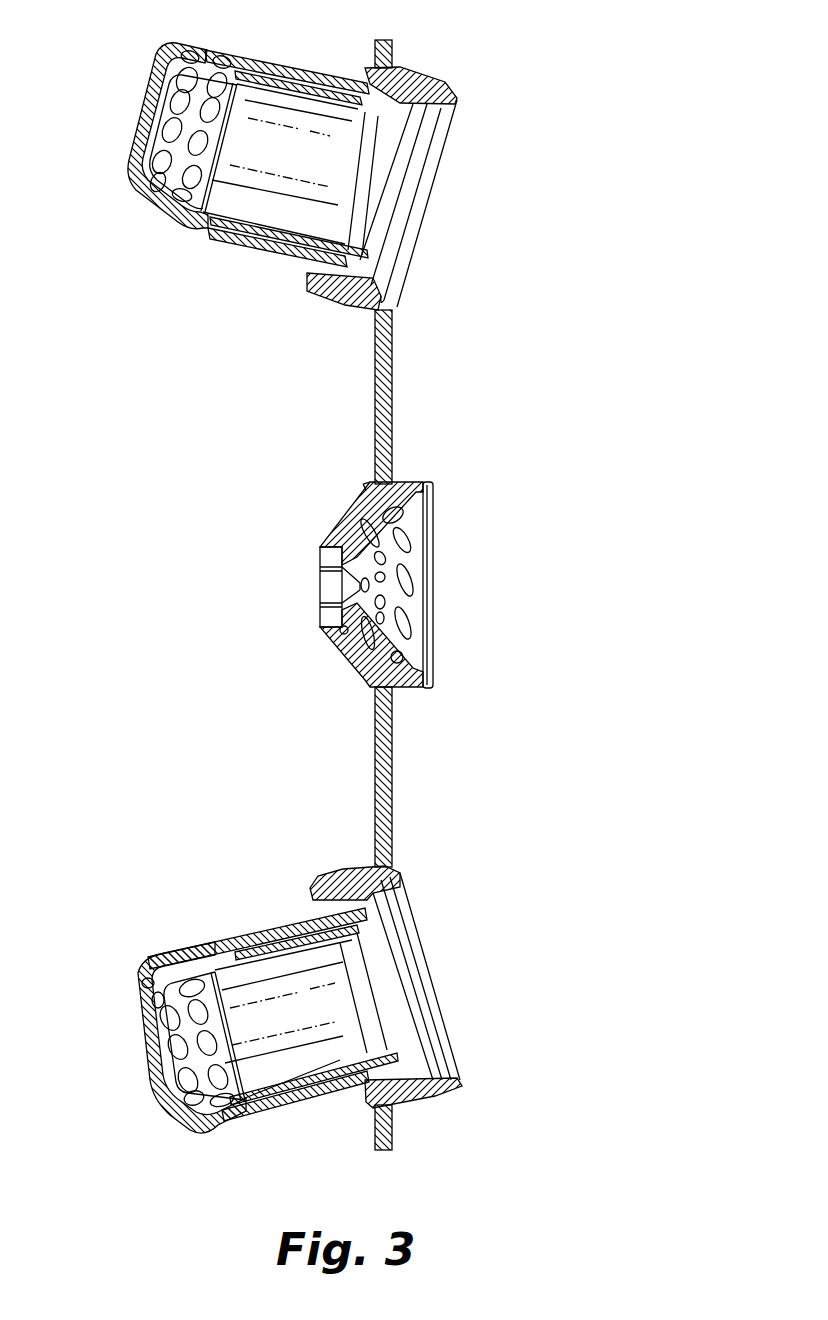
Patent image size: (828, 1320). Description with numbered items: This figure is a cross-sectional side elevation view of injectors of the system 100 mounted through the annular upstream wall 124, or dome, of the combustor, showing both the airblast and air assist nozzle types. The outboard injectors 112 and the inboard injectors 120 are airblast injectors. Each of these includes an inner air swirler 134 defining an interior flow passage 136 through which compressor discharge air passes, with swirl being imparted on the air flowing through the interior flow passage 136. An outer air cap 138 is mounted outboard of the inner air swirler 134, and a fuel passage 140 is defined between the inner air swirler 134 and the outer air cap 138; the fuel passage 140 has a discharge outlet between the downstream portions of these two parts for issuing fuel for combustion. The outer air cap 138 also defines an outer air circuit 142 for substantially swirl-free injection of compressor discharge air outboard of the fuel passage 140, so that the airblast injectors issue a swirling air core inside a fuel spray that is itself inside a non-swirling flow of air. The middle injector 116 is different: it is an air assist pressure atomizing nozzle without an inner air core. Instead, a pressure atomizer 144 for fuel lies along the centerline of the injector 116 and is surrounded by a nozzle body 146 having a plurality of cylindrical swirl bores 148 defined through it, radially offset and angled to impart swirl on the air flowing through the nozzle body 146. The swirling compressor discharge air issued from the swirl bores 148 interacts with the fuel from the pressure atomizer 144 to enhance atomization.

The system 100 is at (586, 133).
The injectors 112 is at (214, 290).
The injectors 116 is at (263, 568).
The injectors 120 is at (190, 910).
The annular upstream wall 124 is at (376, 398).
The inner air swirler 134 is at (168, 222).
The interior flow passage 136 is at (432, 216).
The outer air cap 138 is at (424, 76).
The fuel passage 140 is at (392, 121).
The outer air circuit 142 is at (419, 116).
The pressure atomizer 144 is at (335, 622).
The nozzle body 146 is at (414, 488).
The cylindrical swirl bores 148 is at (408, 537).